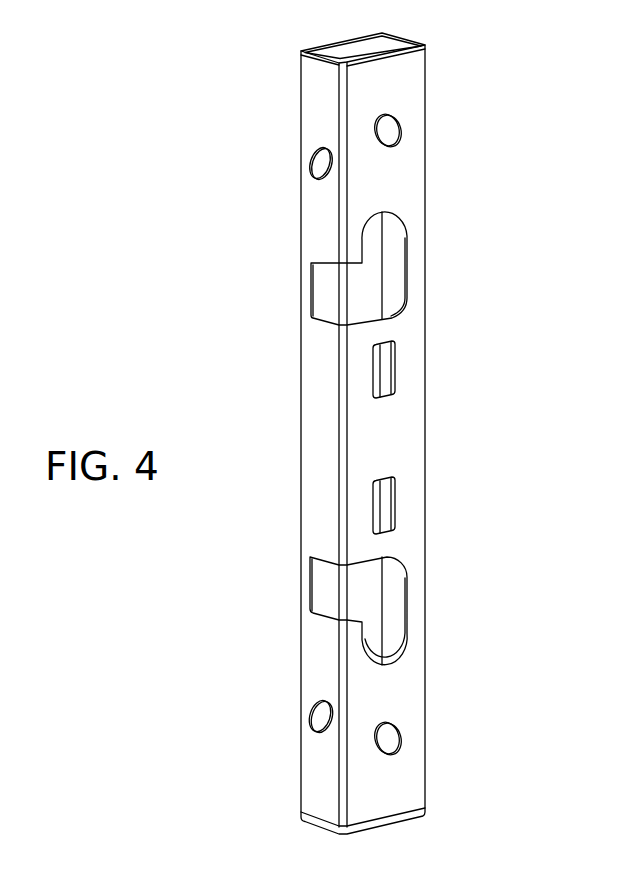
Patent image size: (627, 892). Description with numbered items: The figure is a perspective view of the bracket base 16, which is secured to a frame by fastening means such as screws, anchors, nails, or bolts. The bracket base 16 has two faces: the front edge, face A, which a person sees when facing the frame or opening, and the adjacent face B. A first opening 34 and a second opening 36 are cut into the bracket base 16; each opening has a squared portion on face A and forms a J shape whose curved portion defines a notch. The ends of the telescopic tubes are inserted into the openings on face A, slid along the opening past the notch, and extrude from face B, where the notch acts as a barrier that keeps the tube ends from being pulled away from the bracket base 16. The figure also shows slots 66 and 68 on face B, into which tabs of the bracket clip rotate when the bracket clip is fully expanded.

The bracket base 16 is at (512, 420).
The face A is at (322, 107).
The face B is at (384, 84).
The second opening 36 is at (353, 289).
The first opening 34 is at (353, 589).
The slot 68 is at (385, 368).
The slot 66 is at (385, 510).